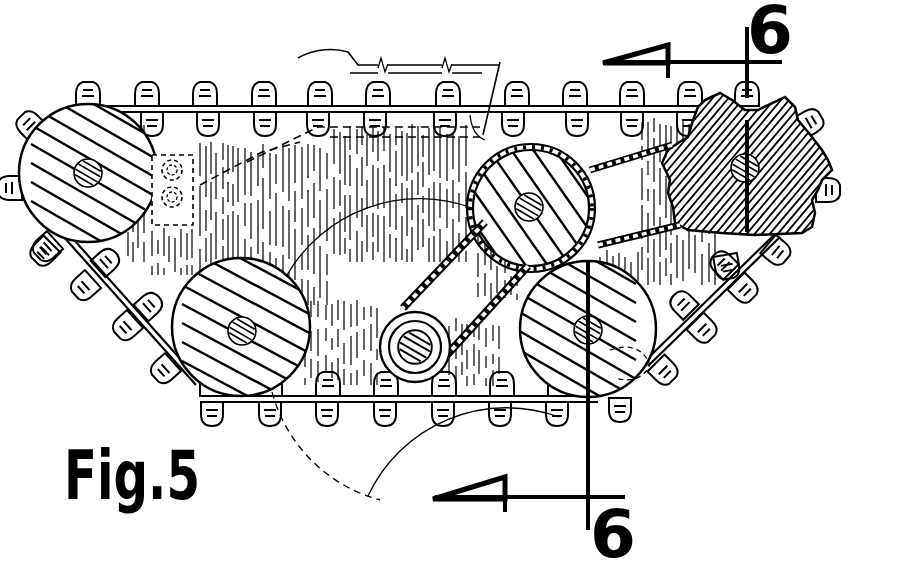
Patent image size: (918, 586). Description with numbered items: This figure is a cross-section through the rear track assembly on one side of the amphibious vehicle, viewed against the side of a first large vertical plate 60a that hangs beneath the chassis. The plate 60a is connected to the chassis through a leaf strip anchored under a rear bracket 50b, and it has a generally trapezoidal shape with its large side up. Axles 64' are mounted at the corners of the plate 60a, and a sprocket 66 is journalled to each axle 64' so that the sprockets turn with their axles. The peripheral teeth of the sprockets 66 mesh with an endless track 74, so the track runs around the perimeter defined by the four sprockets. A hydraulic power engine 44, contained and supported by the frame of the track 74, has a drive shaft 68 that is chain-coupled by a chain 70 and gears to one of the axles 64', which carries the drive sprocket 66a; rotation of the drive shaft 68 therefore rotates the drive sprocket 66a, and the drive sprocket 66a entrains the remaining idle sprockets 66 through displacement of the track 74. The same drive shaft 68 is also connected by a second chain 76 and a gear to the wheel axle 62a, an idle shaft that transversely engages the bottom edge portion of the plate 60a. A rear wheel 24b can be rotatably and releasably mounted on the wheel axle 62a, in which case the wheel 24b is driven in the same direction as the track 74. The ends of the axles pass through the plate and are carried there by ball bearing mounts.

The axles 64' is at (468, 255).
The sprocket 66 is at (113, 130).
The endless track 74 is at (178, 108).
The first large vertical plate 60a is at (240, 147).
The rear bracket 50b is at (381, 54).
The drive shaft 68 is at (498, 86).
The hydraulic power engine 44 is at (548, 138).
The chain 70 is at (655, 128).
The chain 76 is at (405, 312).
The drive sprocket 66a is at (800, 242).
The rear wheel 24b is at (382, 492).
The wheel axle 62a is at (412, 382).